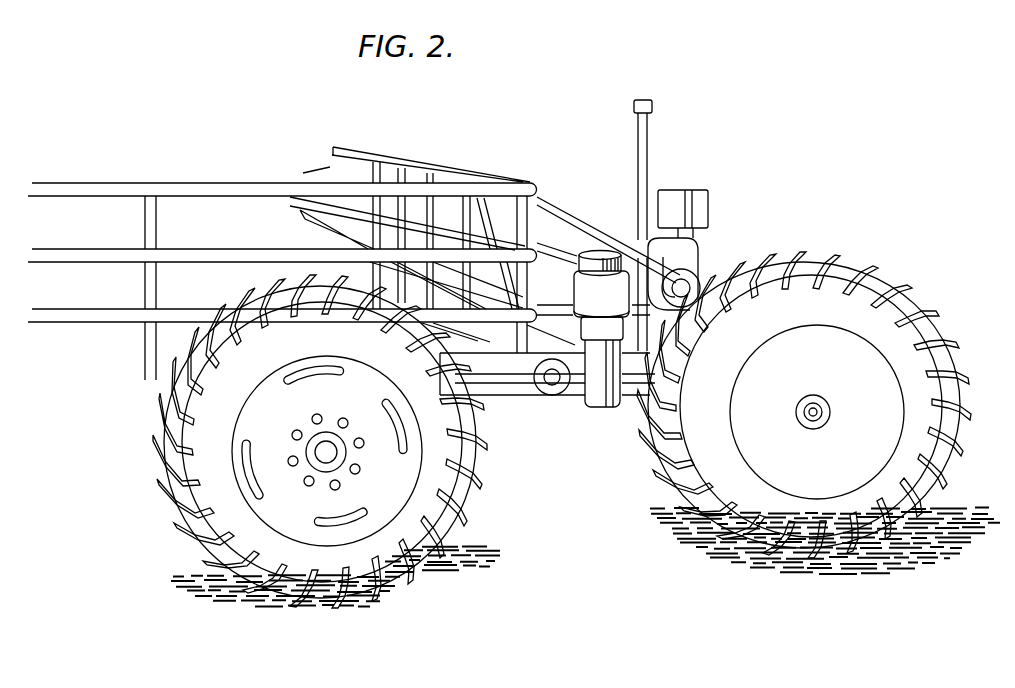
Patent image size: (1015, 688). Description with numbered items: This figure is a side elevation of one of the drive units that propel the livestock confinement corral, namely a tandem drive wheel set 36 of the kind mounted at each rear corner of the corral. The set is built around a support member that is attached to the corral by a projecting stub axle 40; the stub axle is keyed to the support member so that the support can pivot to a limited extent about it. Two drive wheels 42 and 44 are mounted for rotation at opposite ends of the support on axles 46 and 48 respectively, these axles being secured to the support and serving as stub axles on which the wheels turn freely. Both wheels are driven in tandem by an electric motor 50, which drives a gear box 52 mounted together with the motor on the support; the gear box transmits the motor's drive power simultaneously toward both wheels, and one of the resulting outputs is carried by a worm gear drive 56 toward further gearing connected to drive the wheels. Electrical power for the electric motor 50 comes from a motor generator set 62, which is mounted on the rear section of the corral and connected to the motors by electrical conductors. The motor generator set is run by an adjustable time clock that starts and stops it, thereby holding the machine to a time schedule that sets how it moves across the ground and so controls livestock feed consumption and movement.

The tandem drive wheel set 36 is at (487, 363).
The stub axle 40 is at (553, 395).
The drive wheel 42 is at (320, 458).
The drive wheel 44 is at (804, 423).
The axle 46 is at (326, 452).
The axle 48 is at (822, 405).
The electric motor 50 is at (601, 252).
The gear box 52 is at (604, 408).
The worm gear drive 56 is at (636, 387).
The motor generator set 62 is at (699, 205).